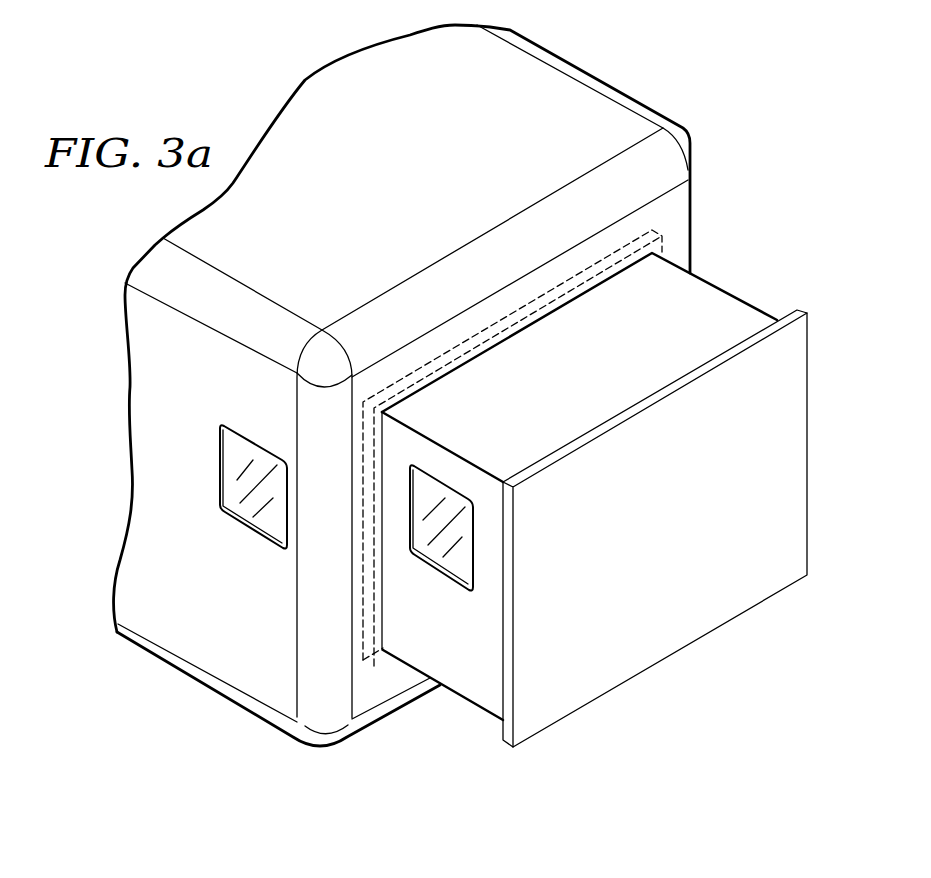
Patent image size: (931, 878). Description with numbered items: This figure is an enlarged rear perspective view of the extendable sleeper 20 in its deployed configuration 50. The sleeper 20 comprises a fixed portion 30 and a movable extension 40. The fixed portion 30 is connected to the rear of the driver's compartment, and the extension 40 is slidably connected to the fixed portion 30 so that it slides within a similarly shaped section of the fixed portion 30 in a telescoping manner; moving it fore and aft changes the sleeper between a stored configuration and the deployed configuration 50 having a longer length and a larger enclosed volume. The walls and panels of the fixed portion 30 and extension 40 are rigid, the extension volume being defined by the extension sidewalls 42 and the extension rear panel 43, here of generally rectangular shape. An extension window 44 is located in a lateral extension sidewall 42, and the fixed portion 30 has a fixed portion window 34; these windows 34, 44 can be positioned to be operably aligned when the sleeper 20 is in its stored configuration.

The extendable sleeper 20 is at (610, 68).
The fixed portion 30 is at (390, 174).
The fixed portion window 34 is at (222, 417).
The extension 40 is at (735, 288).
The extension sidewalls 42 is at (573, 373).
The extension rear panel 43 is at (656, 535).
The extension window 44 is at (438, 582).
The deployed configuration 50 is at (483, 715).